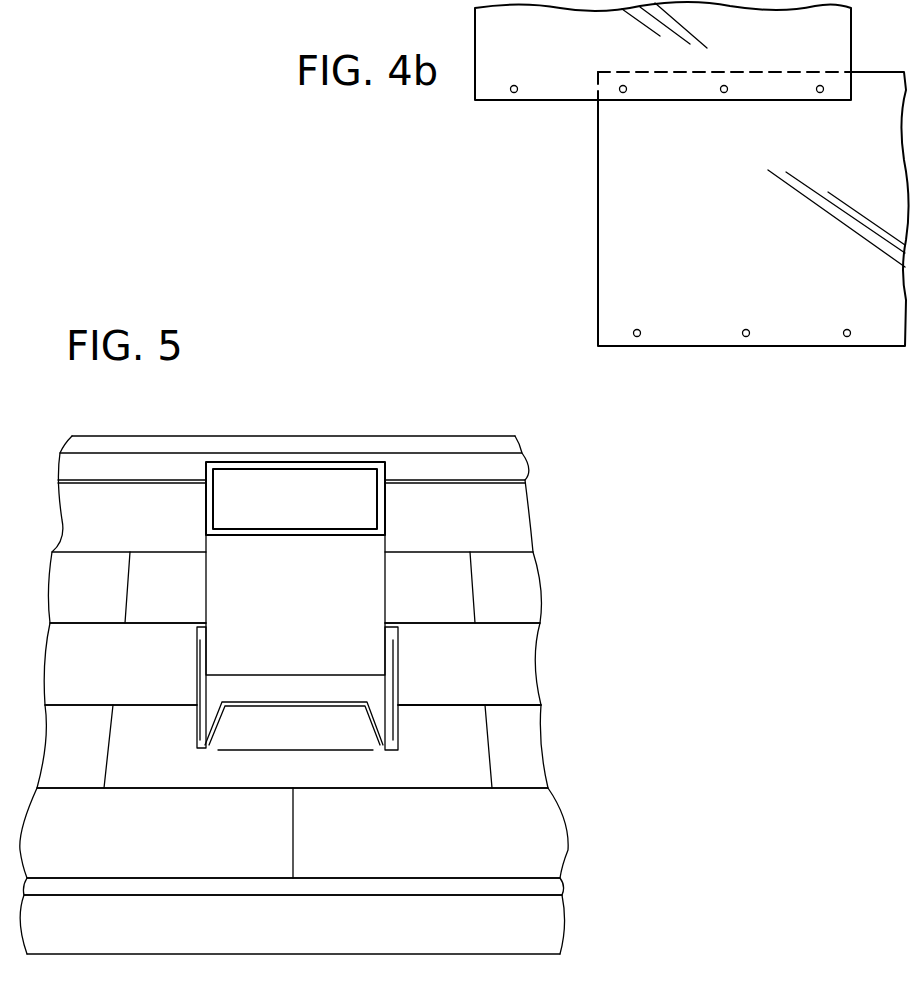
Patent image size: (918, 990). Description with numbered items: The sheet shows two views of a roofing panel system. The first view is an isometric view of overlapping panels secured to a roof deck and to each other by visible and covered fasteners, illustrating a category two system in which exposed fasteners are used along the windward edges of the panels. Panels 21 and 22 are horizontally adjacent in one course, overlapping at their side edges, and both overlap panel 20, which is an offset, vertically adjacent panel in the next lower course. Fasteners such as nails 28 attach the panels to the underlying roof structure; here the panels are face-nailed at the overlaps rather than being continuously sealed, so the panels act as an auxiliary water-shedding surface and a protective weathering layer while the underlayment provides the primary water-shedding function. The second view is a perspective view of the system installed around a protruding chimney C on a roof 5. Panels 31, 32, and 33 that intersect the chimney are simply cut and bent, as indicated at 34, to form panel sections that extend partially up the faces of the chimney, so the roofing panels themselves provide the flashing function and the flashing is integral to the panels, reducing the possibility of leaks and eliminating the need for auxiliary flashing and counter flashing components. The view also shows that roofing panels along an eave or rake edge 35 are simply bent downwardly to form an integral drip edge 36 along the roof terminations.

In FIG. 4b, the panel 20 is at (568, 190).
In FIG. 4b, the panel 21 is at (556, 66).
In FIG. 4b, the panel 22 is at (722, 197).
In FIG. 4b, the nails 28 is at (742, 70).
In FIG. 5, the roof 5 is at (571, 645).
In FIG. 5, the chimney C is at (310, 482).
In FIG. 5, the panel 31 is at (138, 676).
In FIG. 5, the panel 32 is at (464, 676).
In FIG. 5, the panel 33 is at (456, 761).
In FIG. 5, the cut and bent panel section 34 is at (272, 750).
In FIG. 5, the eave edge 35 is at (437, 900).
In FIG. 5, the drip edge 36 is at (178, 886).